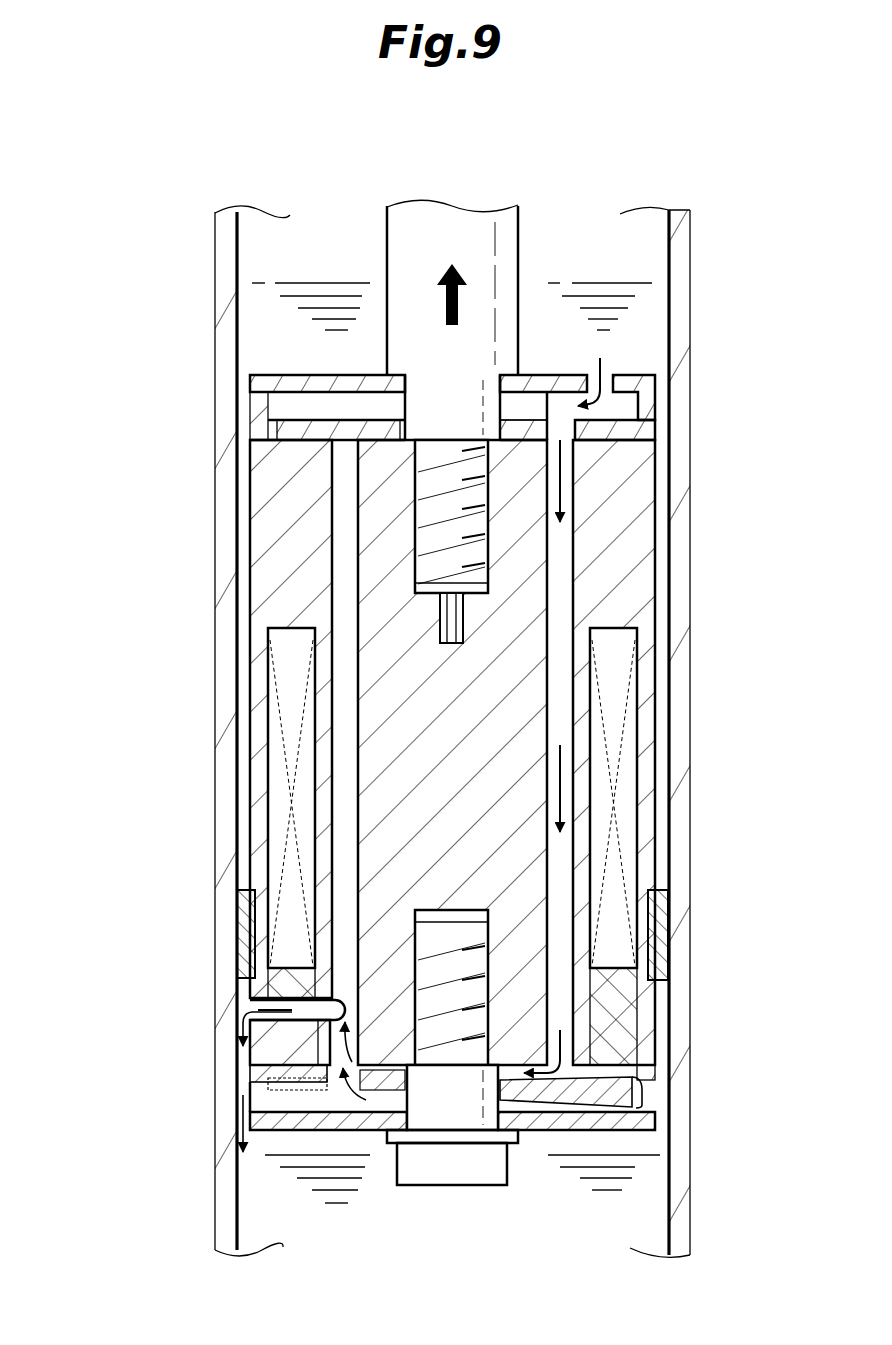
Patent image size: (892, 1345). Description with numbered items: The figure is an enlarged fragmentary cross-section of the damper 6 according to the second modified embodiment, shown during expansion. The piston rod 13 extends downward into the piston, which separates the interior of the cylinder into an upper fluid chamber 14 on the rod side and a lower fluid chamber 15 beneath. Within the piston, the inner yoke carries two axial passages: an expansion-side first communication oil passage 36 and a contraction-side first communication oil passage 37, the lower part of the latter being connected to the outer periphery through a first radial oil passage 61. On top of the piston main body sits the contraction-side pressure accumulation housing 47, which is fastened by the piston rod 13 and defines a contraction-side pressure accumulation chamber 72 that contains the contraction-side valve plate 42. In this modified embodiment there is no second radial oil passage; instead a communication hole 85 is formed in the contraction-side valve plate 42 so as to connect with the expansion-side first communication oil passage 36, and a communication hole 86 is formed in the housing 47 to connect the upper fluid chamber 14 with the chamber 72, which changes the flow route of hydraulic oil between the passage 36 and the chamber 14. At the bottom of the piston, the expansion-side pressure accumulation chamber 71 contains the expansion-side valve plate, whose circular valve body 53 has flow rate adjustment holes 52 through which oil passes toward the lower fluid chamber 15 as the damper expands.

The damper 6 is at (163, 262).
The piston rod 13 is at (508, 232).
The upper fluid chamber 14 is at (630, 259).
The lower fluid chamber 15 is at (441, 1234).
The contraction-side pressure accumulation housing 47 is at (289, 372).
The contraction-side pressure accumulation chamber 72 is at (531, 403).
The communication hole 86 is at (606, 378).
The communication hole 85 is at (623, 417).
The contraction-side valve plate 42 is at (645, 397).
The contraction-side first communication oil passage 37 is at (330, 708).
The expansion-side first communication oil passage 36 is at (575, 722).
The first radial oil passage 61 is at (300, 1010).
The flow rate adjustment holes 52 is at (300, 1130).
The expansion-side pressure accumulation chamber 71 is at (367, 1105).
The valve body 53 is at (536, 1090).